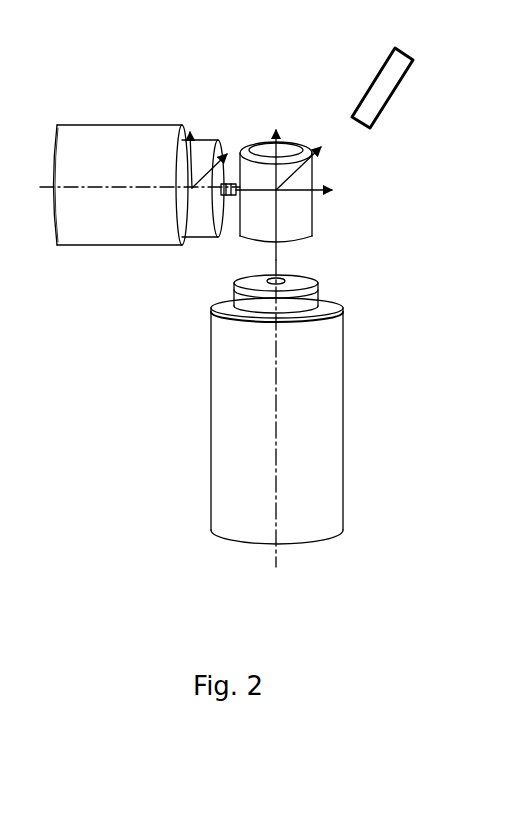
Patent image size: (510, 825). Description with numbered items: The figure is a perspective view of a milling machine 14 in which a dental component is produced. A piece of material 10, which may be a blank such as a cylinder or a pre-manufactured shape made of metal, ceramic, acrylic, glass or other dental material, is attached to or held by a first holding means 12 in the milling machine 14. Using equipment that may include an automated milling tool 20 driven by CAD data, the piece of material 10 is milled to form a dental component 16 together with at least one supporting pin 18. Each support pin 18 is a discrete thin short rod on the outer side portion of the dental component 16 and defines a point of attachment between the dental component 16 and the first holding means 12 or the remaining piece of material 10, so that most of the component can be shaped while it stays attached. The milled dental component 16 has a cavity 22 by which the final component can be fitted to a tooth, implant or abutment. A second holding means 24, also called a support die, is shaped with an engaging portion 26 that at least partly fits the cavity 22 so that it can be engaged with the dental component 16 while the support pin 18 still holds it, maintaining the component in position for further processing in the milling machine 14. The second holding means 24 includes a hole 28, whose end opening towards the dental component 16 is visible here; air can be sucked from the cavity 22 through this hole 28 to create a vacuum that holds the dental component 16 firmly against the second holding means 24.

The piece of material 10 is at (92, 107).
The first holding means 12 is at (53, 170).
The milling machine 14 is at (236, 41).
The dental component 16 is at (305, 178).
The support pin 18 is at (232, 186).
The milling tool 20 is at (375, 98).
The cavity 22 is at (303, 240).
The second holding means 24 is at (328, 337).
The engaging portion 26 is at (313, 290).
The hole 28 is at (268, 281).